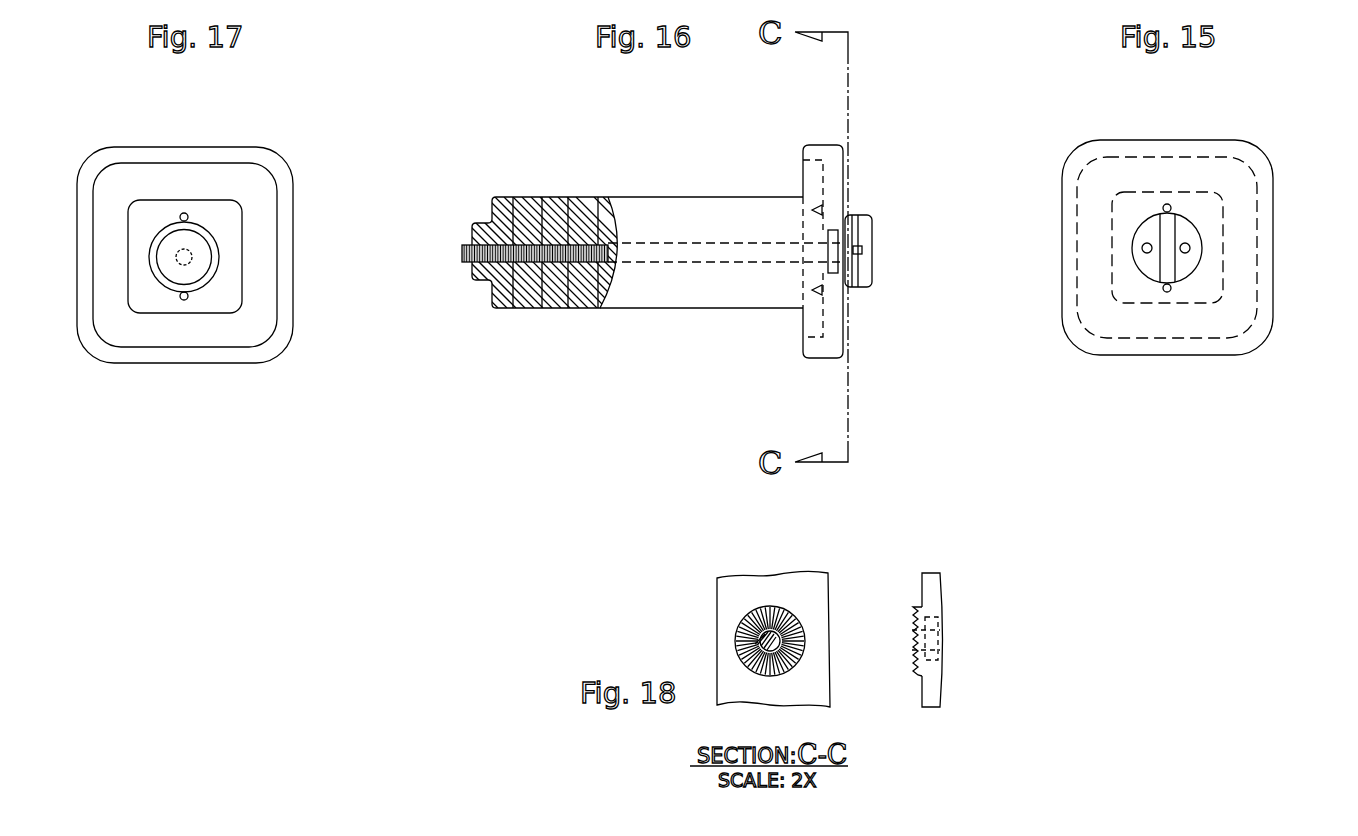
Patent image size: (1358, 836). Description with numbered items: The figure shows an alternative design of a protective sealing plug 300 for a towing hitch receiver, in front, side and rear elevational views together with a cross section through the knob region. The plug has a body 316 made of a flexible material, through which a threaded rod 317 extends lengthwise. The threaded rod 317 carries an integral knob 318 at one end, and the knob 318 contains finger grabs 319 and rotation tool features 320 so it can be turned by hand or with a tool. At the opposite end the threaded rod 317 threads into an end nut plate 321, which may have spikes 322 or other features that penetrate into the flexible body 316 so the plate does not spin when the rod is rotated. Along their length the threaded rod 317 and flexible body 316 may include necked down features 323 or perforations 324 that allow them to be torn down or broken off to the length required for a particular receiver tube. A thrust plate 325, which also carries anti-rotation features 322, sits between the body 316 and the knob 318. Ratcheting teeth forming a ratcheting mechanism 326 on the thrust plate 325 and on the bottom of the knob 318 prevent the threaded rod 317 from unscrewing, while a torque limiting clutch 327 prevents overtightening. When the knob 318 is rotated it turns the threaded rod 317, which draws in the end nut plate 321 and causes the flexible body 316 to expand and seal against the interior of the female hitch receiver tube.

In FIG. 17, the sealing plug 300 is at (195, 400).
In FIG. 16, the sealing plug 300 is at (565, 455).
In FIG. 15, the sealing plug 300 is at (1120, 398).
In FIG. 17, the body 316 is at (161, 196).
In FIG. 16, the body 316 is at (629, 229).
In FIG. 17, the threaded rod 317 is at (192, 250).
In FIG. 16, the threaded rod 317 is at (462, 267).
In FIG. 18, the threaded rod 317 is at (756, 606).
In FIG. 16, the knob 318 is at (861, 206).
In FIG. 15, the knob 318 is at (1147, 266).
In FIG. 15, the finger grabs 319 is at (1163, 229).
In FIG. 16, the rotation tool features 320 is at (867, 260).
In FIG. 15, the rotation tool features 320 is at (1188, 255).
In FIG. 16, the end nut plate 321 is at (477, 217).
In FIG. 17, the spikes 322 is at (184, 302).
In FIG. 16, the spikes 322 is at (807, 203).
In FIG. 15, the spikes 322 is at (1167, 300).
In FIG. 16, the necked down features 323 is at (559, 242).
In FIG. 16, the perforations 324 is at (543, 311).
In FIG. 16, the thrust plate 325 is at (828, 361).
In FIG. 18, the ratcheting mechanism 326 is at (737, 648).
In FIG. 16, the torque limiting clutch 327 is at (836, 275).
In FIG. 18, the torque limiting clutch 327 is at (936, 614).